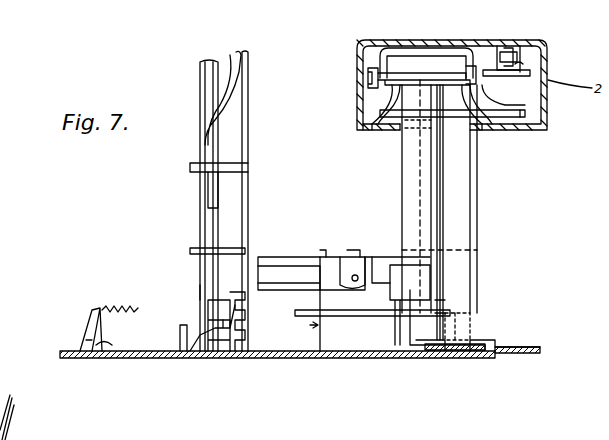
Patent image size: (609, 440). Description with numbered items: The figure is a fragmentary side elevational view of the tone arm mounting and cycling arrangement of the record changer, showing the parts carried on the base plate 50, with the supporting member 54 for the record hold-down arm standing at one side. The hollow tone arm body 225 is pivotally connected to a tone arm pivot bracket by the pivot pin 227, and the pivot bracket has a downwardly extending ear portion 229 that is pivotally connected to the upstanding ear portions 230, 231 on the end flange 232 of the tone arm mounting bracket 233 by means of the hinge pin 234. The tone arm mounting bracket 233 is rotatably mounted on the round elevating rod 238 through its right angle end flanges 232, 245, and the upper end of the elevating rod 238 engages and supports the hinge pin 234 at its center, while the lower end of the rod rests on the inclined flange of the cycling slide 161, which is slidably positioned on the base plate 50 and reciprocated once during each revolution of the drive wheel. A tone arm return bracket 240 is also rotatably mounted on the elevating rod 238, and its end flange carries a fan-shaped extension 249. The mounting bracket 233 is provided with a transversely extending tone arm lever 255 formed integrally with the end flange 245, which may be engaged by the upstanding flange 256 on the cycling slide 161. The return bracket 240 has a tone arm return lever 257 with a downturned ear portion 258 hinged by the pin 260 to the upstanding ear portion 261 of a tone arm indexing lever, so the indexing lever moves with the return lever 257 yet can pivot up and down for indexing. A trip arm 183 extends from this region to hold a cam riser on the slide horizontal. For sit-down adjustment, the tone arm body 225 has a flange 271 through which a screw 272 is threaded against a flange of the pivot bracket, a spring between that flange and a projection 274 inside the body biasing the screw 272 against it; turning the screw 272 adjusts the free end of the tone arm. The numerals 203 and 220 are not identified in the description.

The base plate 50 is at (276, 357).
The supporting member 54 is at (250, 78).
The cycling slide 161 is at (364, 355).
The trip arm 183 is at (393, 302).
The carriage 203 is at (286, 280).
The housing 220 is at (376, 60).
The tone arm body 225 is at (538, 113).
The pivot pin 227 is at (420, 52).
The ear portion 229 is at (522, 94).
The upstanding ear portion 230 is at (384, 84).
The upstanding ear portion 231 is at (483, 127).
The end flange 232 is at (378, 139).
The tone arm mounting bracket 233 is at (460, 190).
The hinge pin 234 is at (380, 98).
The elevating rod 238 is at (433, 322).
The tone arm return bracket 240 is at (412, 168).
The end flange 245 is at (410, 348).
The fan-shaped extension 249 is at (522, 113).
The tone arm lever 255 is at (341, 318).
The upstanding flange 256 is at (310, 325).
The tone arm return lever 257 is at (277, 257).
The downturned ear portion 258 is at (357, 254).
The pin 260 is at (350, 268).
The upstanding ear portion 261 is at (336, 256).
The flange 271 is at (530, 48).
The screw 272 is at (522, 58).
The projection 274 is at (527, 72).